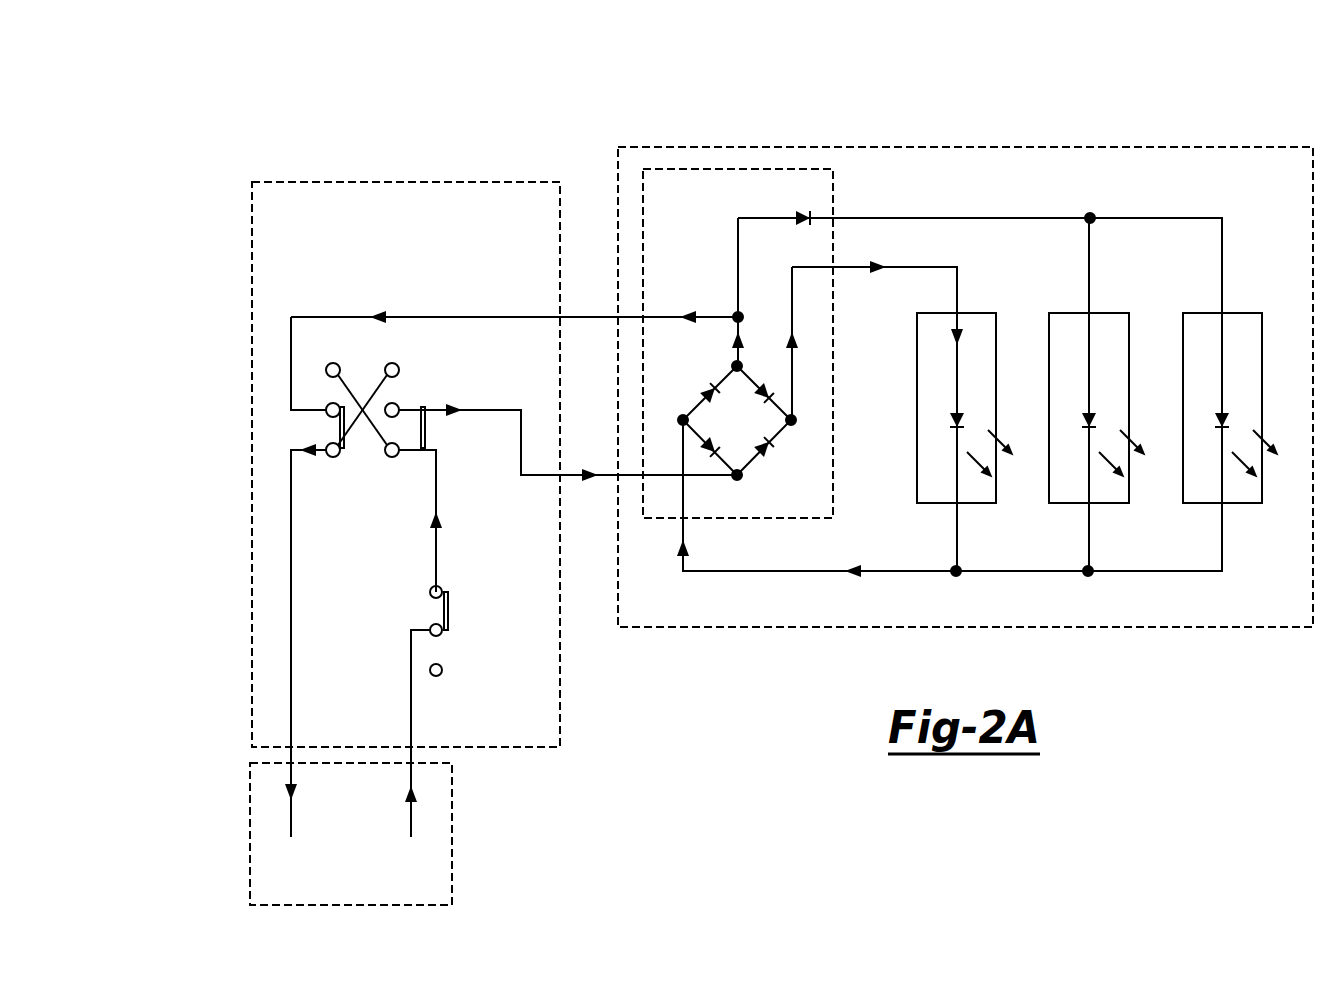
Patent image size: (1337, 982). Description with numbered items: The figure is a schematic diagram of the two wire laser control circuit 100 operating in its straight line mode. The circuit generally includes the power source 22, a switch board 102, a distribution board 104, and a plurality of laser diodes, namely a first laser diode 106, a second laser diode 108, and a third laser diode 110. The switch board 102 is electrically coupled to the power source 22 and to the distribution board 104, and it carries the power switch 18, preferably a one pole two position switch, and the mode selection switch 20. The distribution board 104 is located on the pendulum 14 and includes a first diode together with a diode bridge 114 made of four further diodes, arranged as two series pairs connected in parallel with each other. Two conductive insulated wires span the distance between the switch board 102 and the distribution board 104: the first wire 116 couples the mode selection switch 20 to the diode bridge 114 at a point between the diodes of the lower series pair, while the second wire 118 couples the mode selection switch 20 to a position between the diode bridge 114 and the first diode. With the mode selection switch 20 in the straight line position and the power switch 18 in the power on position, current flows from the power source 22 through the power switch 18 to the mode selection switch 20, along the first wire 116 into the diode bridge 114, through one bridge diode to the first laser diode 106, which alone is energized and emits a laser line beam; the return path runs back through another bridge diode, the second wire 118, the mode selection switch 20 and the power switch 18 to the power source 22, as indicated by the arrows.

The two wire laser control circuit 100 is at (378, 118).
The switch board 102 is at (497, 182).
The distribution board 104 is at (800, 169).
The pendulum 14 is at (1000, 147).
The first laser diode 106 is at (984, 313).
The second laser diode 108 is at (1117, 313).
The third laser diode 110 is at (1249, 313).
The diode bridge 114 is at (765, 472).
The first wire 116 is at (608, 475).
The second wire 118 is at (590, 317).
The mode selection switch 20 is at (437, 378).
The power switch 18 is at (390, 652).
The power source 22 is at (250, 833).